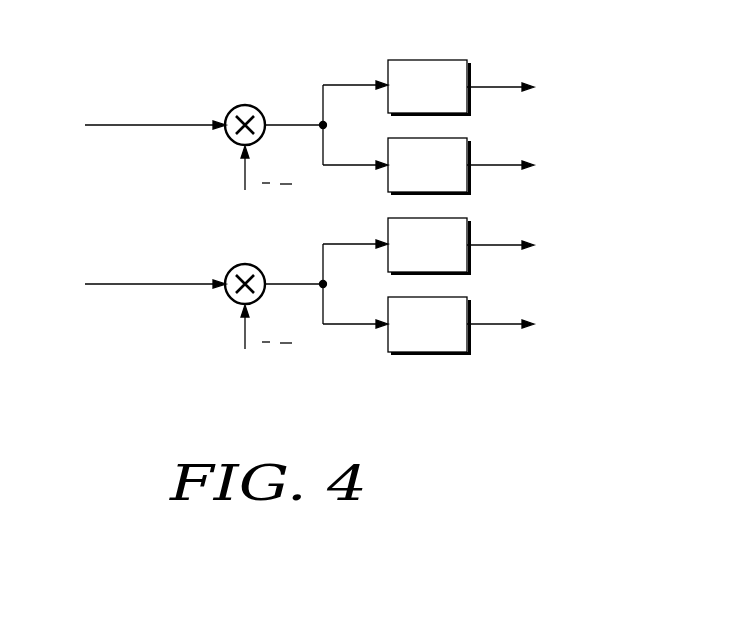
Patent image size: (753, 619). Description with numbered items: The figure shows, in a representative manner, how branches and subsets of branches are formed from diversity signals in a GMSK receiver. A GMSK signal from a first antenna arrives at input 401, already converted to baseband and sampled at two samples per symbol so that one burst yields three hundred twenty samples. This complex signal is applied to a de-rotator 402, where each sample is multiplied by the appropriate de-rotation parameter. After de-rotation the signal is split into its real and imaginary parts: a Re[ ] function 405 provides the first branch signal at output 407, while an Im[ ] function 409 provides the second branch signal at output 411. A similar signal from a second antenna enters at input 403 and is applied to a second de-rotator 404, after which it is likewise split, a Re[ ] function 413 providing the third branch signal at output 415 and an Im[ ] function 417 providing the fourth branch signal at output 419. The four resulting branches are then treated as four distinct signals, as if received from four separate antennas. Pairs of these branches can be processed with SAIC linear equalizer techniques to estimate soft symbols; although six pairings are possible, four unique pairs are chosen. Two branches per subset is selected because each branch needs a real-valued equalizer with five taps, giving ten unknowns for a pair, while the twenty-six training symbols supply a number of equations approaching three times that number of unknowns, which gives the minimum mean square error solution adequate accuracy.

The input 401 is at (107, 127).
The de-rotator 402 is at (251, 106).
The input 403 is at (107, 286).
The de-rotator 404 is at (251, 265).
The Re[ ] function 405 is at (438, 59).
The output x_n^1 407 is at (503, 89).
The Im[ ] function 409 is at (388, 151).
The output x_n^2 411 is at (503, 167).
The Re[ ] function 413 is at (388, 230).
The output x_n^3 415 is at (503, 247).
The Im[ ] function 417 is at (388, 310).
The output x_n^4 419 is at (503, 326).